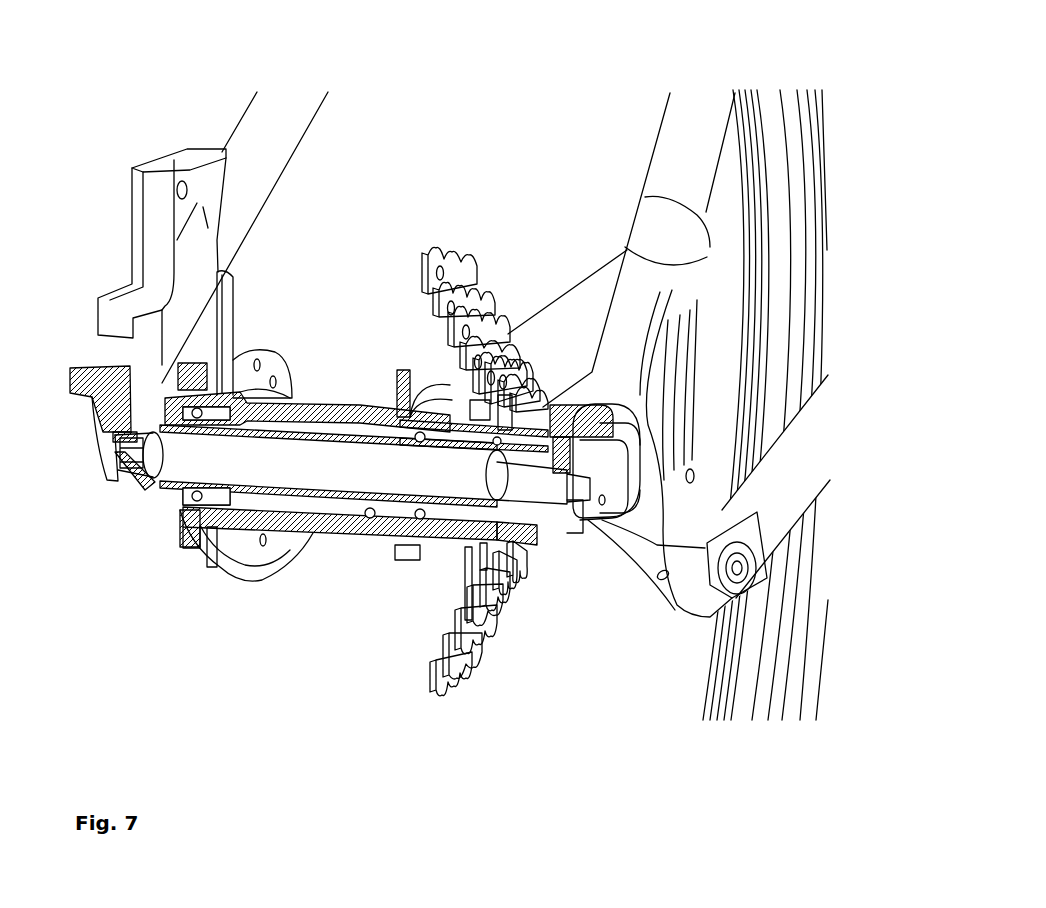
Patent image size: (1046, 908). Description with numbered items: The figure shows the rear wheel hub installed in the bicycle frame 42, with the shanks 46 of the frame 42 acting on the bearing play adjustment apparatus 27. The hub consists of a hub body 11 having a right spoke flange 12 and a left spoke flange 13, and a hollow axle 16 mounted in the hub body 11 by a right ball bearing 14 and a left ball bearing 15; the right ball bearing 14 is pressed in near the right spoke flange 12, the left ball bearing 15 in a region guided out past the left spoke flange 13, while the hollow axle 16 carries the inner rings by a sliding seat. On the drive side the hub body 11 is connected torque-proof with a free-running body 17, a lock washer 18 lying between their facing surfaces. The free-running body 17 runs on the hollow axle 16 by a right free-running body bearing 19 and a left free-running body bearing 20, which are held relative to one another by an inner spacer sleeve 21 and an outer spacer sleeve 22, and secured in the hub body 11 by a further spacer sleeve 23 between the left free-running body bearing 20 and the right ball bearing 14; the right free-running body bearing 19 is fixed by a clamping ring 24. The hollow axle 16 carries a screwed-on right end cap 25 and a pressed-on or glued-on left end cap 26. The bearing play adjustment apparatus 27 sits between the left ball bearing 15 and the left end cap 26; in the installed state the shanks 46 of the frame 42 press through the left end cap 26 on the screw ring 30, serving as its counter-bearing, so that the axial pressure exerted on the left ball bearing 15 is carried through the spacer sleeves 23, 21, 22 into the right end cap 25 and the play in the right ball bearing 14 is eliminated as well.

The hub body 11 is at (390, 400).
The right spoke flange 12 is at (405, 395).
The left spoke flange 13 is at (232, 295).
The right ball bearing 14 is at (368, 525).
The left ball bearing 15 is at (205, 503).
The hollow axle 16 is at (300, 497).
The free-running body 17 is at (478, 400).
The lock washer 18 is at (400, 528).
The right free-running body bearing 19 is at (503, 393).
The left free-running body bearing 20 is at (432, 370).
The inner spacer sleeve 21 is at (458, 577).
The outer spacer sleeve 22 is at (497, 545).
The spacer sleeve 23 is at (417, 545).
The clamping ring 24 is at (518, 548).
The right end cap 25 is at (548, 400).
The left end cap 26 is at (140, 405).
The bearing play adjustment apparatus 27 is at (165, 408).
The screw ring 30 is at (153, 405).
The frame 42 is at (245, 137).
The shanks 46 is at (104, 482).